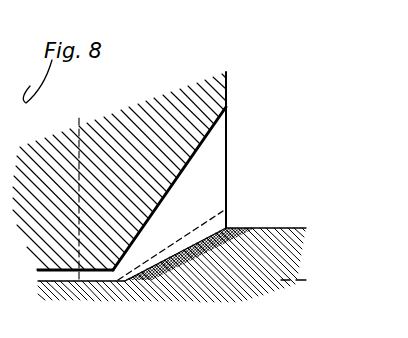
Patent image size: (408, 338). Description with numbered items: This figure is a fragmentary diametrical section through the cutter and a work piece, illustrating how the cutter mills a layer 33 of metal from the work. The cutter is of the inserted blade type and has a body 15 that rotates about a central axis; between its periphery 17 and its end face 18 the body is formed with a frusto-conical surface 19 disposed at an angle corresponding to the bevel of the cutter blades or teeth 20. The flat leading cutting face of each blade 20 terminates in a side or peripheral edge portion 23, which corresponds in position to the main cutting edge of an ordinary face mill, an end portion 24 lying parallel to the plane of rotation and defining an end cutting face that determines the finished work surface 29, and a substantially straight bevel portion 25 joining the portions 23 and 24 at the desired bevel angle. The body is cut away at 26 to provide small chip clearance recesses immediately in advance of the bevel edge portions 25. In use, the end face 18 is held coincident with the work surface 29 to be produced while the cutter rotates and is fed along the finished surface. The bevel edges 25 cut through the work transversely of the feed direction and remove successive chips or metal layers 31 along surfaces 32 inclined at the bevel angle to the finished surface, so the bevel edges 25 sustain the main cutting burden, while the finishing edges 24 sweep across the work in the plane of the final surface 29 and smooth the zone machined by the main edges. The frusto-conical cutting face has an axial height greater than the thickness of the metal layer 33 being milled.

The body 15 is at (158, 115).
The periphery 17 is at (227, 87).
The end face 18 is at (70, 272).
The frusto-conical surface 19 is at (167, 244).
The cutter blade 20 is at (229, 178).
The side or peripheral edge portion 23 is at (227, 153).
The end portion 24 is at (105, 282).
The bevel portion 25 is at (199, 243).
The chip clearance recess 26 is at (208, 133).
The finished work surface 29 is at (44, 279).
The chip or metal layer 31 is at (232, 228).
The inclined surface 32 is at (153, 262).
The metal layer 33 is at (314, 228).